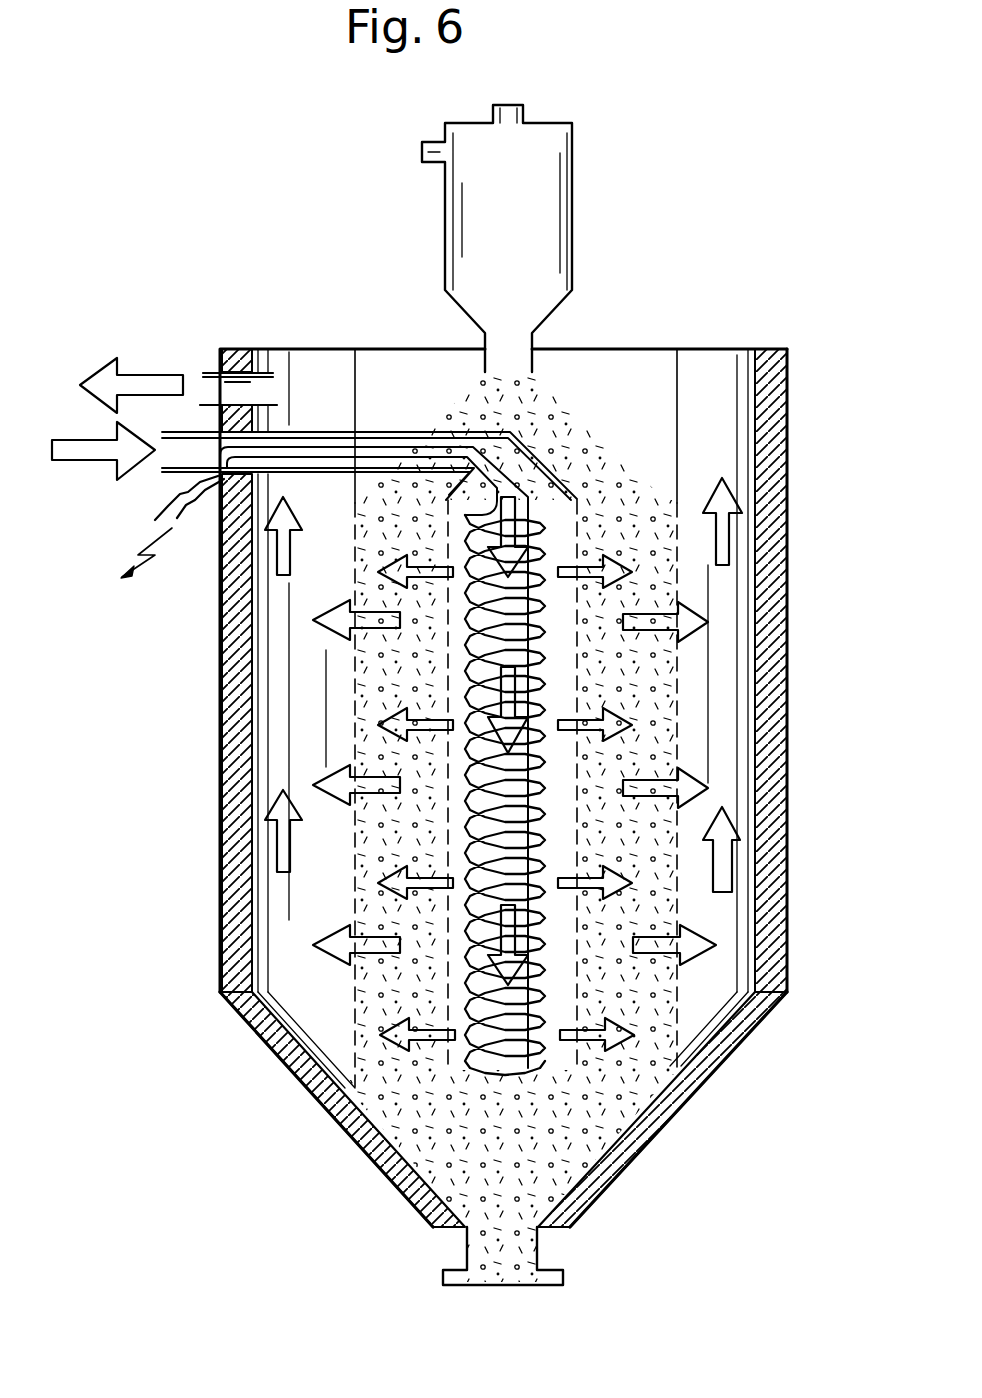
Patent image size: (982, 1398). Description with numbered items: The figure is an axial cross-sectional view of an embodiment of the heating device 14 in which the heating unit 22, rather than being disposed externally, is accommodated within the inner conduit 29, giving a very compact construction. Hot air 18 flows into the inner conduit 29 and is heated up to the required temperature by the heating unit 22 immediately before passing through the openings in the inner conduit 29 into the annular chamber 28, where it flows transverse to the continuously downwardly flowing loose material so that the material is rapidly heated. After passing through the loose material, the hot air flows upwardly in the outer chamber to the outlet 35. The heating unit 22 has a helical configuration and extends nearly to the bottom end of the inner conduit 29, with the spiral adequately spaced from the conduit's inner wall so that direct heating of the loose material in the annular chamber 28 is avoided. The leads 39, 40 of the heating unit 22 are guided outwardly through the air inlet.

The heating device 14 is at (768, 222).
The hot air 18 is at (103, 452).
The heating unit 22 is at (545, 642).
The annular chamber 28 is at (640, 487).
The inner conduit 29 is at (577, 925).
The outlet 35 is at (243, 390).
The lead 39 is at (155, 520).
The lead 40 is at (178, 518).